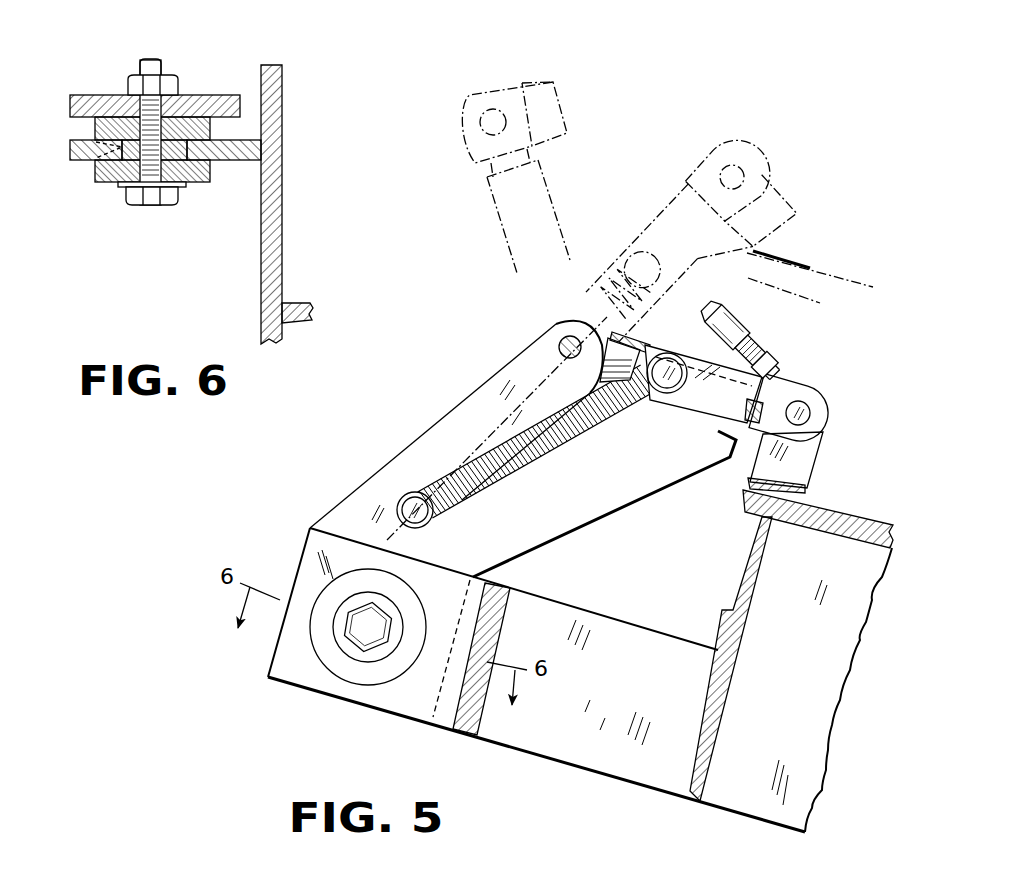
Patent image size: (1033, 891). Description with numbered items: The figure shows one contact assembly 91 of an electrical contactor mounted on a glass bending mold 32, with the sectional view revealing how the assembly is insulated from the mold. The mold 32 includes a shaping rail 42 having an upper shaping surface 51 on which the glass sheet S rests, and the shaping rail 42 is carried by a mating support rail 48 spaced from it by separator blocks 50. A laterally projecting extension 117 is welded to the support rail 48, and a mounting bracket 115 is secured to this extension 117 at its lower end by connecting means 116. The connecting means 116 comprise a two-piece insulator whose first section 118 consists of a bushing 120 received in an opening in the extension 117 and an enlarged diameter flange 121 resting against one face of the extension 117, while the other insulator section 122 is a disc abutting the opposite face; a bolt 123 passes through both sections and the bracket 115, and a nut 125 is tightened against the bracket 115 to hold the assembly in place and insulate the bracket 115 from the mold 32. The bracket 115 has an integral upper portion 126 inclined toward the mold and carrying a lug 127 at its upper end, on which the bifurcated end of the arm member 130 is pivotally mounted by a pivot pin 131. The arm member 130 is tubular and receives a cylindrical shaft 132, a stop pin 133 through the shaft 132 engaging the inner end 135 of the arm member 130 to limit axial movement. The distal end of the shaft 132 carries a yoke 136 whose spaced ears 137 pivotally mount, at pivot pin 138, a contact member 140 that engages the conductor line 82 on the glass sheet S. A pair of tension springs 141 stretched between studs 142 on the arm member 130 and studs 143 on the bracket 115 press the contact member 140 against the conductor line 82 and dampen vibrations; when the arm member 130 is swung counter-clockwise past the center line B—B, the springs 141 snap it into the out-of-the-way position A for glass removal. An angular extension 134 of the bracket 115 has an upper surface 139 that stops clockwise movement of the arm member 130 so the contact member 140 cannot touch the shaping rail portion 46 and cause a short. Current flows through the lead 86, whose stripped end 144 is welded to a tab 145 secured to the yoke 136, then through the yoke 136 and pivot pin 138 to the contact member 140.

In FIG. 6, the mold 32 is at (295, 219).
In FIG. 5, the mold 32 is at (862, 677).
In FIG. 5, the shaping rail 42 is at (718, 739).
In FIG. 5, the shaping rail portion 46 is at (735, 658).
In FIG. 6, the support rail 48 is at (278, 103).
In FIG. 5, the support rail 48 is at (507, 617).
In FIG. 6, the separator blocks 50 is at (295, 303).
In FIG. 5, the separator blocks 50 is at (562, 772).
In FIG. 5, the upper shaping surface 51 is at (795, 508).
In FIG. 5, the conductor line 82 is at (795, 480).
In FIG. 5, the lead 86 is at (730, 300).
In FIG. 5, the contact assembly 91 is at (477, 294).
In FIG. 6, the mounting bracket 115 is at (198, 98).
In FIG. 5, the mounting bracket 115 is at (424, 420).
In FIG. 6, the connecting means 116 is at (122, 230).
In FIG. 5, the connecting means 116 is at (316, 672).
In FIG. 6, the laterally projecting extension 117 is at (241, 160).
In FIG. 5, the laterally projecting extension 117 is at (308, 560).
In FIG. 6, the first insulator section 118 is at (191, 188).
In FIG. 5, the first insulator section 118 is at (374, 689).
In FIG. 6, the bushing 120 is at (122, 147).
In FIG. 6, the enlarged diameter flange 121 is at (100, 182).
In FIG. 5, the enlarged diameter flange 121 is at (320, 630).
In FIG. 6, the insulator section 122 is at (95, 128).
In FIG. 6, the bolt 123 is at (148, 59).
In FIG. 5, the bolt 123 is at (378, 618).
In FIG. 6, the nut 125 is at (130, 88).
In FIG. 5, the upper portion 126 is at (483, 390).
In FIG. 5, the lug 127 is at (565, 323).
In FIG. 5, the arm member 130 is at (699, 398).
In FIG. 5, the pivot pin 131 is at (558, 350).
In FIG. 5, the cylindrical shaft 132 is at (606, 360).
In FIG. 5, the stop pin 133 is at (603, 320).
In FIG. 5, the angular extension 134 is at (685, 468).
In FIG. 5, the inner end 135 is at (630, 337).
In FIG. 5, the yoke 136 is at (752, 452).
In FIG. 5, the ears 137 is at (815, 395).
In FIG. 5, the pivot pin 138 is at (797, 401).
In FIG. 5, the upper surface 139 is at (720, 436).
In FIG. 5, the contact member 140 is at (812, 452).
In FIG. 5, the tension springs 141 is at (533, 470).
In FIG. 5, the studs 142 is at (667, 398).
In FIG. 5, the studs 143 is at (405, 494).
In FIG. 5, the stripped end 144 is at (742, 342).
In FIG. 5, the tab 145 is at (785, 370).
In FIG. 5, the out-of-the-way position A is at (535, 82).
In FIG. 5, the center line B is at (618, 337).
In FIG. 5, the glass sheet S is at (897, 527).